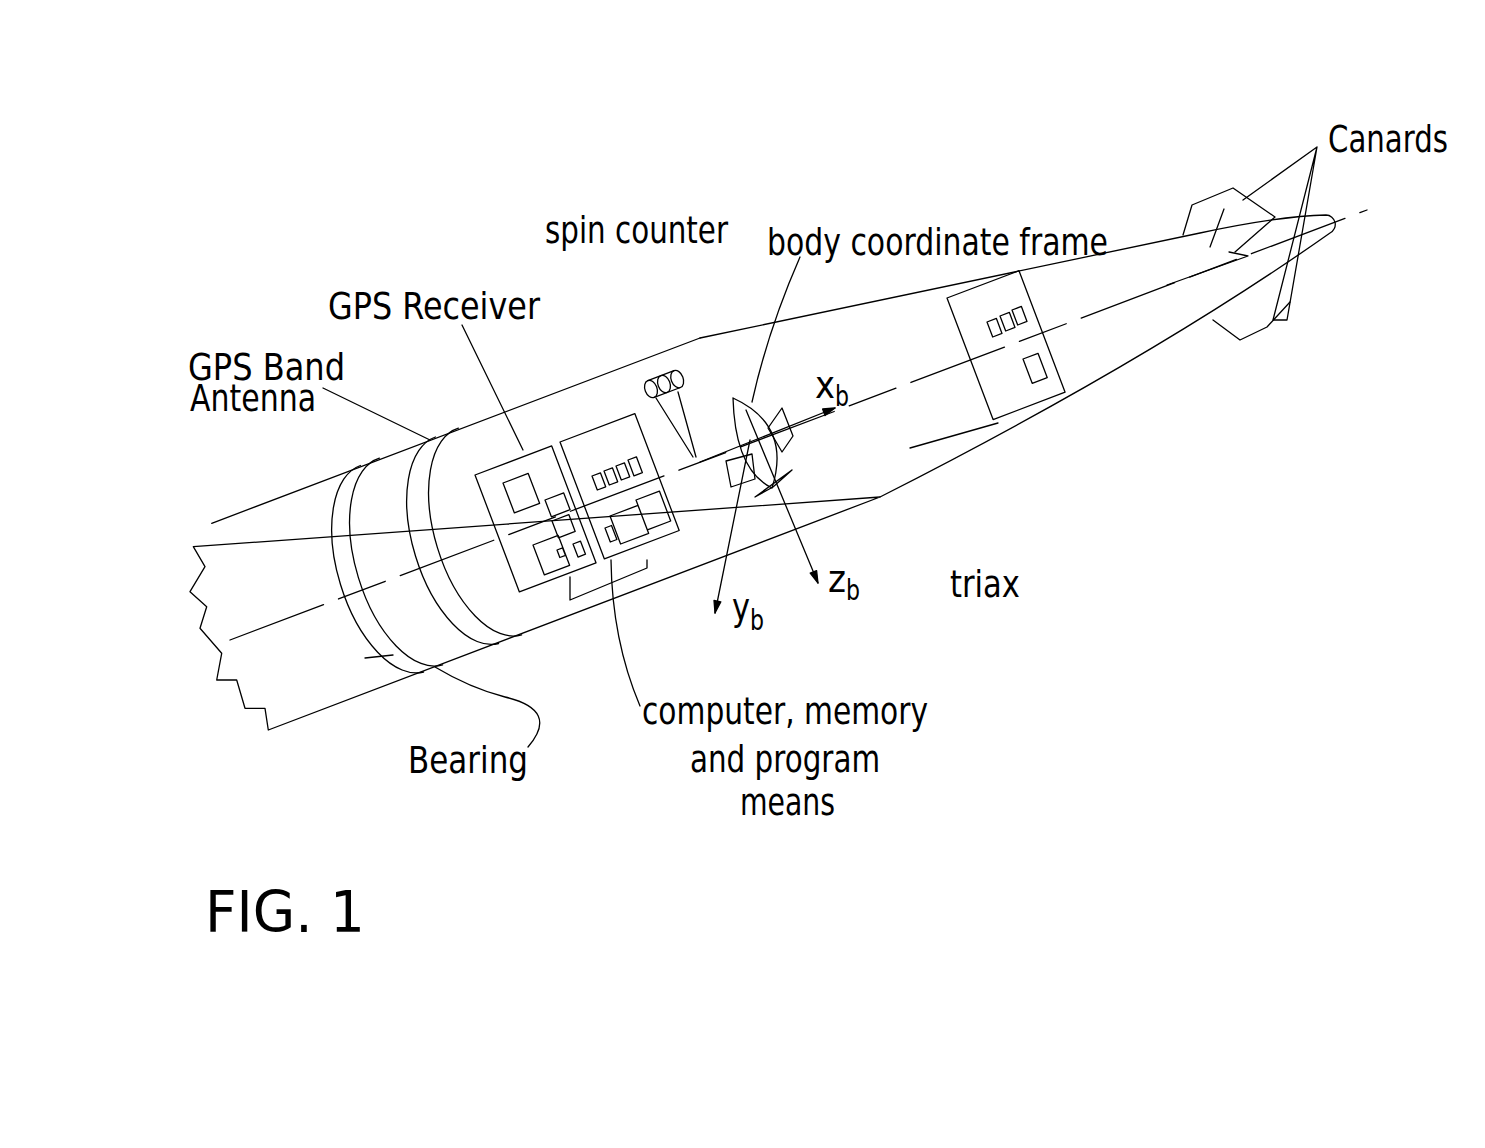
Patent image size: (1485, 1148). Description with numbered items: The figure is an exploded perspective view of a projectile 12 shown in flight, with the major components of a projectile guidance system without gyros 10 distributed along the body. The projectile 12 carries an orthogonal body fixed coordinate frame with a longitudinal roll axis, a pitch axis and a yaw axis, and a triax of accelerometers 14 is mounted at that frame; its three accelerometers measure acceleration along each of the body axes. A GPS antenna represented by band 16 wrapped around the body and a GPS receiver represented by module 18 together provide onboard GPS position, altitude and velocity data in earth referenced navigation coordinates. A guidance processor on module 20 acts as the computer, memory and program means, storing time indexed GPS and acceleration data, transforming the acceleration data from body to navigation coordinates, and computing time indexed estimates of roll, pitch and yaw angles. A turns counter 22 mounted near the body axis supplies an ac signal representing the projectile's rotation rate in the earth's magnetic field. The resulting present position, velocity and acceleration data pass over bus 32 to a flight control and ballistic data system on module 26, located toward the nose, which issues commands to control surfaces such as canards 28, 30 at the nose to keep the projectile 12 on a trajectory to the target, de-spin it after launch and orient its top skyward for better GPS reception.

The projectile guidance system without gyros 10 is at (913, 198).
The projectile 12 is at (1057, 405).
The triax of accelerometers 14 is at (733, 398).
The GPS antenna band 16 is at (440, 447).
The GPS receiver module 18 is at (535, 590).
The computer, memory and program means module 20 is at (611, 560).
The turns counter 22 is at (648, 377).
The flight control and ballistic data system module 26 is at (1030, 403).
The canard 28 is at (1195, 270).
The canard 30 is at (1224, 209).
The bus 32 is at (957, 432).